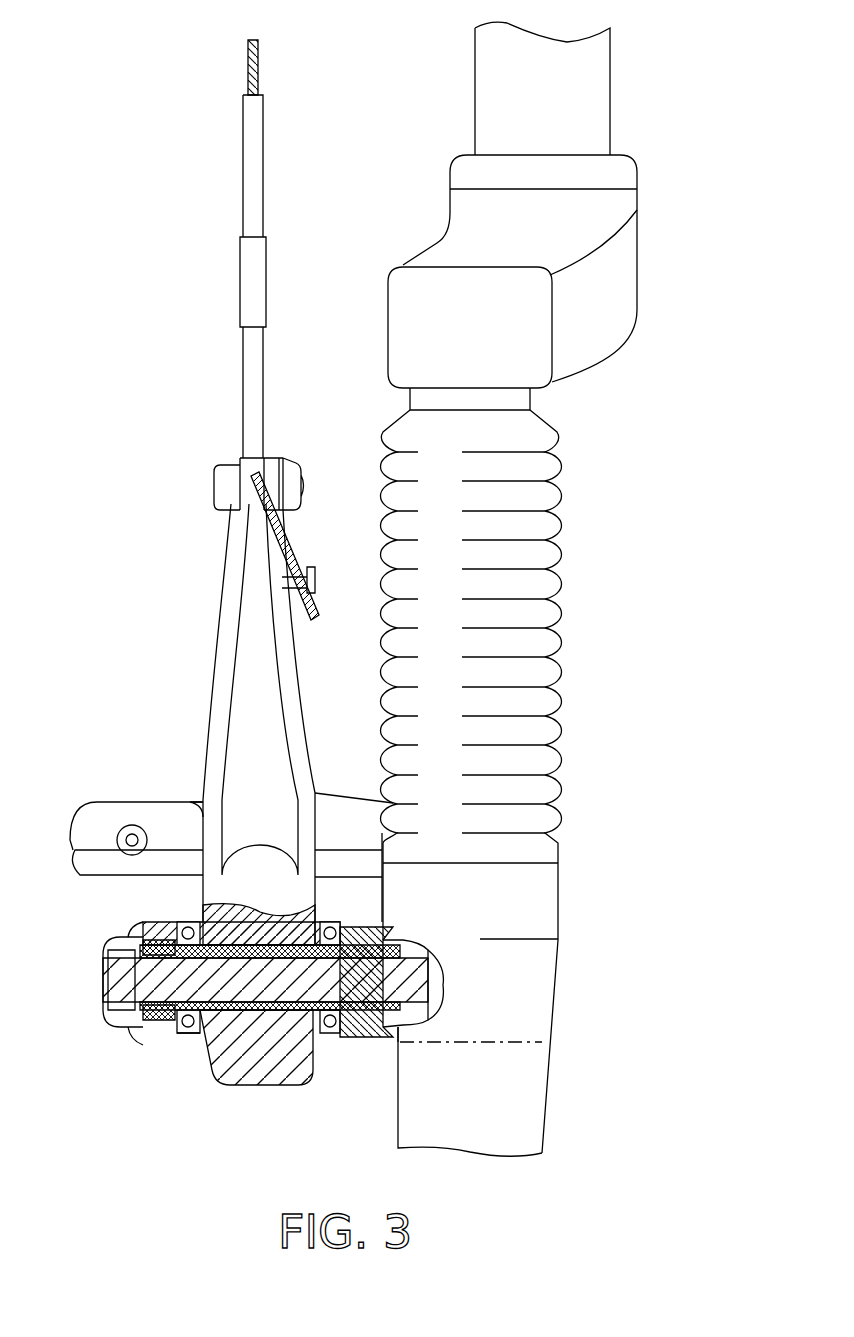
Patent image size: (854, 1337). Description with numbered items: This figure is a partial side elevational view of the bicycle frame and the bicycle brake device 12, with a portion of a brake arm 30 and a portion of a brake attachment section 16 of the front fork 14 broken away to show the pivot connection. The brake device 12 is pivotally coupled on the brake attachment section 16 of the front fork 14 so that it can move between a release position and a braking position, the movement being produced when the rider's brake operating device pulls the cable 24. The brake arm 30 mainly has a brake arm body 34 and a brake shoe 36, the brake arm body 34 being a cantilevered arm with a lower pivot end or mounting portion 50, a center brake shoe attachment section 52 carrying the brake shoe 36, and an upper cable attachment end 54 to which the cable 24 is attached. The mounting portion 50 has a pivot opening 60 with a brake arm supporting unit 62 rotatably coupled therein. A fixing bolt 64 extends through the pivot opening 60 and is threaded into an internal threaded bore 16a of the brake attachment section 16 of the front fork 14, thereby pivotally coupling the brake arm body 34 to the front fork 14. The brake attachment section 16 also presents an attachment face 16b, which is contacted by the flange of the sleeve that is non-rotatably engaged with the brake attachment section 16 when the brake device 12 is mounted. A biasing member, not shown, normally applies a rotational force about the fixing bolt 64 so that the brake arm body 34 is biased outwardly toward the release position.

The brake device 12 is at (163, 331).
The front fork 14 is at (560, 897).
The brake attachment section 16 is at (414, 1036).
The internal threaded bore 16a is at (431, 973).
The attachment face 16b is at (359, 1040).
The cable 24 is at (264, 160).
The brake arm 30 is at (223, 673).
The brake arm body 34 is at (212, 860).
The brake shoe 36 is at (143, 797).
The mounting portion 50 is at (266, 1057).
The center brake shoe attachment section 52 is at (203, 817).
The upper cable attachment end 54 is at (242, 579).
The pivot opening 60 is at (225, 1018).
The brake arm supporting unit 62 is at (335, 1055).
The fixing bolt 64 is at (149, 1022).